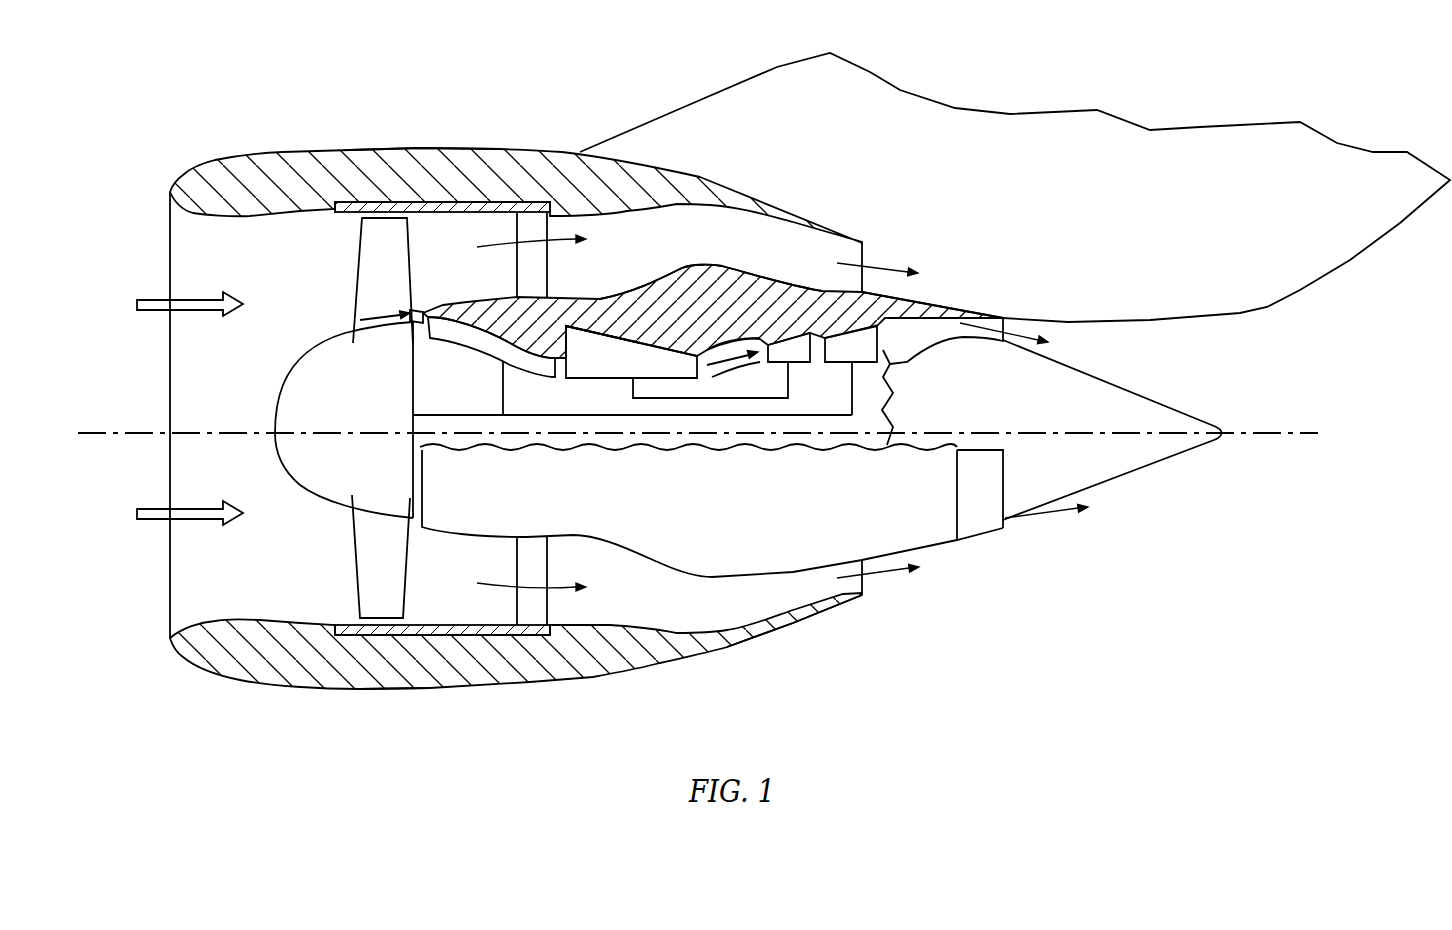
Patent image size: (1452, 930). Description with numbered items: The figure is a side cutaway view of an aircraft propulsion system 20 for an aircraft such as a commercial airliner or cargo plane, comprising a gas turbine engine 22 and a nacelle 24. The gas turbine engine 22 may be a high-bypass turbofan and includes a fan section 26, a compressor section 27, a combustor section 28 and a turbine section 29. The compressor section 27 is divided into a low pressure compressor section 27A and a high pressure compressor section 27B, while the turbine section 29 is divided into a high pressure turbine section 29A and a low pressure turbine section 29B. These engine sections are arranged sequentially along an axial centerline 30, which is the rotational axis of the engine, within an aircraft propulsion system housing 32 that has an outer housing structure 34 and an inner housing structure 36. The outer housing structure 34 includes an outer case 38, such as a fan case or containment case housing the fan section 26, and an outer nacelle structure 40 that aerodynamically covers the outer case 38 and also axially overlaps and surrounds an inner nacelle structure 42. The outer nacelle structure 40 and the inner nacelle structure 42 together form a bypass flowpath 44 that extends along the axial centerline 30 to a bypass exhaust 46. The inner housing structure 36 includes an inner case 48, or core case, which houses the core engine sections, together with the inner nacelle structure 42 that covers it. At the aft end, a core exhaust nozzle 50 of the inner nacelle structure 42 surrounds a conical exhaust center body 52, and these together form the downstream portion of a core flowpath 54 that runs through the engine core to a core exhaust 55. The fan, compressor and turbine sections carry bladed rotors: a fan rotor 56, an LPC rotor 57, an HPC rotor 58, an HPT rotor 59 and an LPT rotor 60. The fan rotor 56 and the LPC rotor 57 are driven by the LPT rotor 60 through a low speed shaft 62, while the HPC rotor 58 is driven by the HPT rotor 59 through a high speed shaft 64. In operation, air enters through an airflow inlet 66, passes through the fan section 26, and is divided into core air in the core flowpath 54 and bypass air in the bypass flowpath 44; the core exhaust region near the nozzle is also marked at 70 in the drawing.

The aircraft propulsion system 20 is at (210, 116).
The gas turbine engine 22 is at (278, 380).
The nacelle 24 is at (452, 147).
The fan section 26 is at (307, 605).
The compressor section 27 is at (690, 472).
The low pressure compressor (LPC) section 27A is at (472, 318).
The high pressure compressor (HPC) section 27B is at (632, 340).
The combustor section 28 is at (737, 380).
The turbine section 29 is at (752, 488).
The high pressure turbine (HPT) section 29A is at (792, 340).
The low pressure turbine (LPT) section 29B is at (883, 297).
The axial centerline 30 is at (1305, 440).
The aircraft propulsion system housing 32 is at (525, 694).
The outer housing structure 34 is at (432, 696).
The inner housing structure 36 is at (768, 590).
The outer case 38 is at (350, 202).
The outer nacelle structure 40 is at (395, 148).
The inner nacelle structure 42 is at (730, 267).
The bypass flowpath 44 is at (583, 286).
The bypass exhaust 46 is at (865, 583).
The inner case 48 is at (697, 347).
The core exhaust nozzle 50 is at (978, 533).
The exhaust center body 52 is at (1118, 480).
The core flowpath 54 is at (914, 346).
The core exhaust 55 is at (1007, 322).
The fan rotor 56 is at (333, 485).
The LPC rotor 57 is at (494, 355).
The HPC rotor 58 is at (608, 378).
The HPT rotor 59 is at (797, 364).
The LPT rotor 60 is at (862, 364).
The low speed shaft 62 is at (813, 415).
The high speed shaft 64 is at (663, 398).
The airflow inlet 66 is at (170, 248).
The core nozzle exit 70 is at (1007, 531).